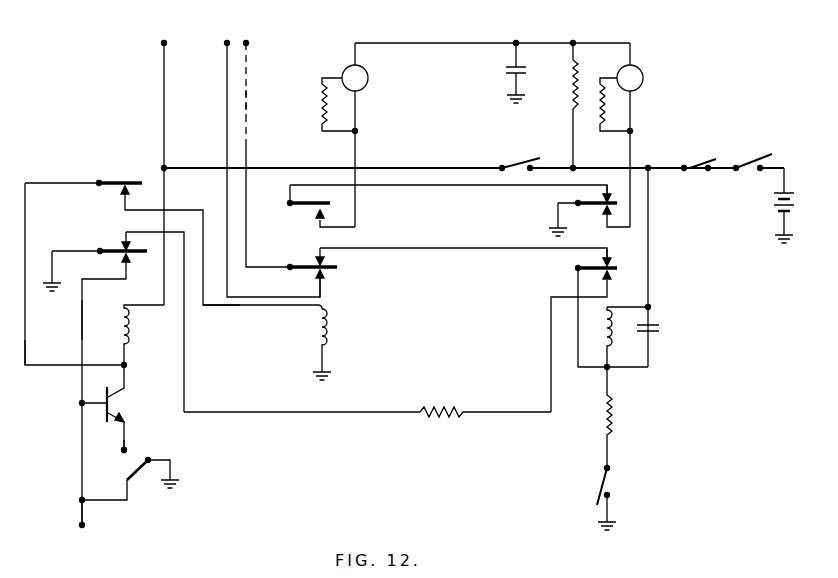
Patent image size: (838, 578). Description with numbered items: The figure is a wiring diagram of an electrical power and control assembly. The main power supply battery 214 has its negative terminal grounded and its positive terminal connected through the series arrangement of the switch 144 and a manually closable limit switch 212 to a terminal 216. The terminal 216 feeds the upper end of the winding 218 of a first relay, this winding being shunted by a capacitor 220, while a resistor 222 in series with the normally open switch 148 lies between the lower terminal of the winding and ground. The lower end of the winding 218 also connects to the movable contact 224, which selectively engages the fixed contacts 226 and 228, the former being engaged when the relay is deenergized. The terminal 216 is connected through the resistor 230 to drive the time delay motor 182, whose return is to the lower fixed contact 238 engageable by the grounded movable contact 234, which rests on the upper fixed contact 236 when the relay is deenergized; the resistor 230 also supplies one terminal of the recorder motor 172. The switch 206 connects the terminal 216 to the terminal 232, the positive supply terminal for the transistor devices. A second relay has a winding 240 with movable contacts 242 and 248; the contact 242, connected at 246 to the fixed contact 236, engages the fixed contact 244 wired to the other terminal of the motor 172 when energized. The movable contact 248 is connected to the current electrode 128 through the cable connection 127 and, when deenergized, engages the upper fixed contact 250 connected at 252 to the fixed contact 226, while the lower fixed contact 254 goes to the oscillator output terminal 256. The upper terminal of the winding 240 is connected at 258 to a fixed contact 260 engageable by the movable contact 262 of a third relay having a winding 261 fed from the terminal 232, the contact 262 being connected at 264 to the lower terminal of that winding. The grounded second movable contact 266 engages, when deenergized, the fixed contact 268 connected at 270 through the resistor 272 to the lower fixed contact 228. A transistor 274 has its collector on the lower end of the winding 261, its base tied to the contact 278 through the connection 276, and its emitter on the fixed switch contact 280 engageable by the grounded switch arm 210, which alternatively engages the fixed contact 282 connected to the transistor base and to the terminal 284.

The cable connection 127 is at (246, 105).
The current electrode 128 is at (246, 43).
The switch 144 is at (744, 158).
The switch 148 is at (600, 490).
The recorder motor 172 is at (365, 70).
The time delay motor 182 is at (643, 73).
The switch 206 is at (523, 158).
The switch arm 210 is at (138, 470).
The manually closable switch 212 is at (702, 172).
The main power supply battery 214 is at (788, 185).
The terminal 216 is at (648, 168).
The winding 218 is at (614, 340).
The capacitor 220 is at (662, 334).
The resistor 222 is at (614, 420).
The movable contact 224 is at (572, 266).
The fixed contact 226 is at (614, 264).
The fixed contact 228 is at (614, 283).
The resistor 230 is at (576, 62).
The terminal 232 is at (163, 43).
The movable contact 234 is at (572, 202).
The fixed contact 236 is at (614, 200).
The fixed contact 238 is at (614, 216).
The winding 240 is at (333, 323).
The movable contact 242 is at (303, 206).
The fixed contact 244 is at (330, 213).
The connection 246 is at (392, 186).
The movable contact 248 is at (306, 261).
The fixed contact 250 is at (326, 261).
The connection 252 is at (462, 248).
The fixed contact 254 is at (326, 283).
The terminal 256 is at (226, 42).
The connection 258 is at (210, 305).
The fixed contact 260 is at (122, 195).
The winding 261 is at (132, 322).
The movable contact 262 is at (117, 181).
The connection 264 is at (22, 345).
The movable contact 266 is at (118, 253).
The fixed contact 268 is at (120, 242).
The connection 270 is at (246, 412).
The resistor 272 is at (455, 416).
The transistor 274 is at (128, 402).
The connection 276 is at (82, 325).
The contact 278 is at (129, 260).
The fixed switch contact 280 is at (122, 459).
The fixed contact 282 is at (126, 488).
The terminal 284 is at (80, 526).